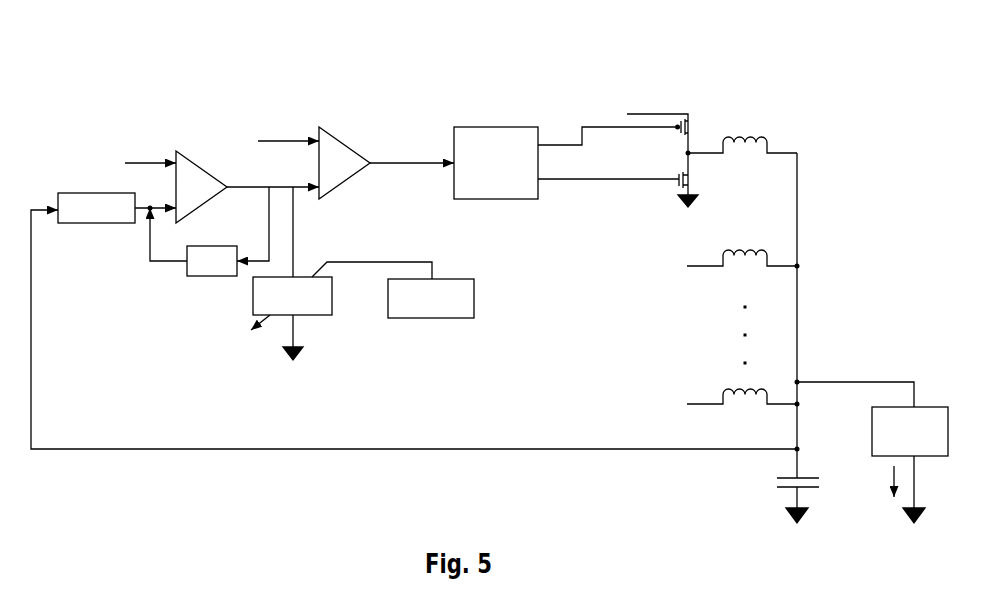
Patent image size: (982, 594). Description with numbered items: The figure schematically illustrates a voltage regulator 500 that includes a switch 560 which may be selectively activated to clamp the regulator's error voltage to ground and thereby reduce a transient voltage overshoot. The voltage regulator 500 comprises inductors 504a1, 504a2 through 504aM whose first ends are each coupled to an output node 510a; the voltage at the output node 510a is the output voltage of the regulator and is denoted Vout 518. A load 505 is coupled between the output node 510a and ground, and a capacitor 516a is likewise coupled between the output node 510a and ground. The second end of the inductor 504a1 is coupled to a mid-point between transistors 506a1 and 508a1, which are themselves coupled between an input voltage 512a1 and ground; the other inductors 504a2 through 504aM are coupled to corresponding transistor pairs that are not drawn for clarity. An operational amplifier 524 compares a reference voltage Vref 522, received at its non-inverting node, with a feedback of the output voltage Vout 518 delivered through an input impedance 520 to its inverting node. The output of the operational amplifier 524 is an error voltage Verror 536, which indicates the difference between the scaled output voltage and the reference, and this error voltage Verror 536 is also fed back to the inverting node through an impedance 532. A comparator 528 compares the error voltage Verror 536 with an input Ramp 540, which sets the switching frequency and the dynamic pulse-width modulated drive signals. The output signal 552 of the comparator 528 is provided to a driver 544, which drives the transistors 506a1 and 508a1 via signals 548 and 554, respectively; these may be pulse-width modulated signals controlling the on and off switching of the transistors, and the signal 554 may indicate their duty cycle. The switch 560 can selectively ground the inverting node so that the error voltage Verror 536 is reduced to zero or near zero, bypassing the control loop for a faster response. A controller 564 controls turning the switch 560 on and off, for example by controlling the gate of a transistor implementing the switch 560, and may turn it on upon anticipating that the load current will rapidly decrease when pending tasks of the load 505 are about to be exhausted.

The voltage regulator 500 is at (790, 80).
The load 505 is at (910, 431).
The inductor 504a1 is at (742, 137).
The inductor 504a2 is at (743, 249).
The inductor 504aM is at (743, 406).
The transistor 506a1 is at (665, 136).
The transistor 508a1 is at (706, 180).
The output node 510a is at (799, 381).
The input voltage 512a1 is at (641, 96).
The capacitor 516a is at (776, 485).
The output voltage Vout 518 is at (414, 329).
The input impedance 520 is at (96, 208).
The reference voltage Vref 522 is at (144, 153).
The operational amplifier 524 is at (201, 187).
The comparator 528 is at (344, 163).
The impedance 532 is at (193, 242).
The error voltage Verror 536 is at (273, 222).
The Ramp 540 is at (277, 130).
The driver 544 is at (496, 163).
The signal 548 is at (606, 144).
The output signal 552 is at (412, 150).
The signal 554 is at (608, 188).
The switch 560 is at (291, 318).
The controller 564 is at (393, 290).